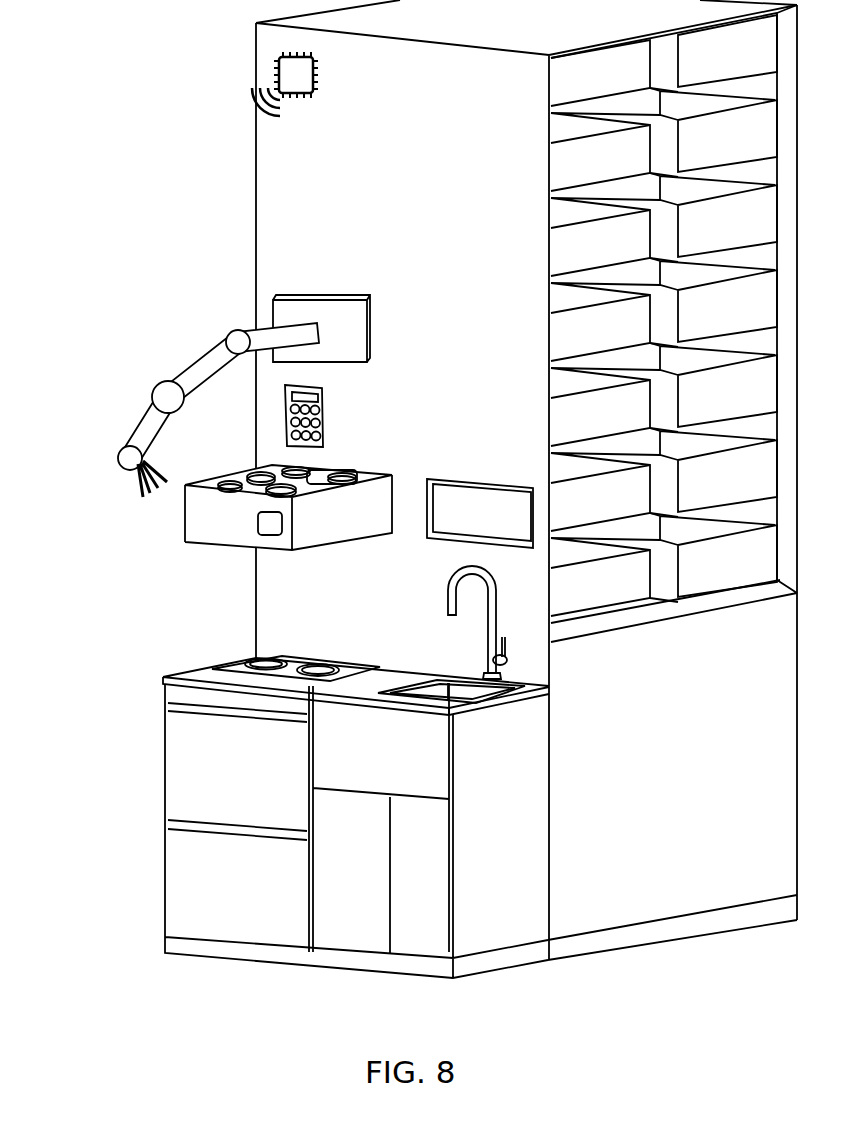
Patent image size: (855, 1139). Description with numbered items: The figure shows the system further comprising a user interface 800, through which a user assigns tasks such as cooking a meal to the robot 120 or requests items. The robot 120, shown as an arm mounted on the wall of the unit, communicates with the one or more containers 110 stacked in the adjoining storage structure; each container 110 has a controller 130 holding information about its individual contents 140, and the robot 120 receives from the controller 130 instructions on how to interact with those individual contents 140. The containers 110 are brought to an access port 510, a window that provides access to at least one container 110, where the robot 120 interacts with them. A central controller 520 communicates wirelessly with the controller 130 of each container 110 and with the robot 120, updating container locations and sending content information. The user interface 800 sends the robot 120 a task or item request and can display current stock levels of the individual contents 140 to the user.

The container 110 is at (208, 526).
The robot 120 is at (153, 387).
The controller 130 is at (275, 536).
The individual contents 140 is at (353, 473).
The access port 510 is at (477, 487).
The central controller 520 is at (277, 62).
The user interface 800 is at (322, 403).